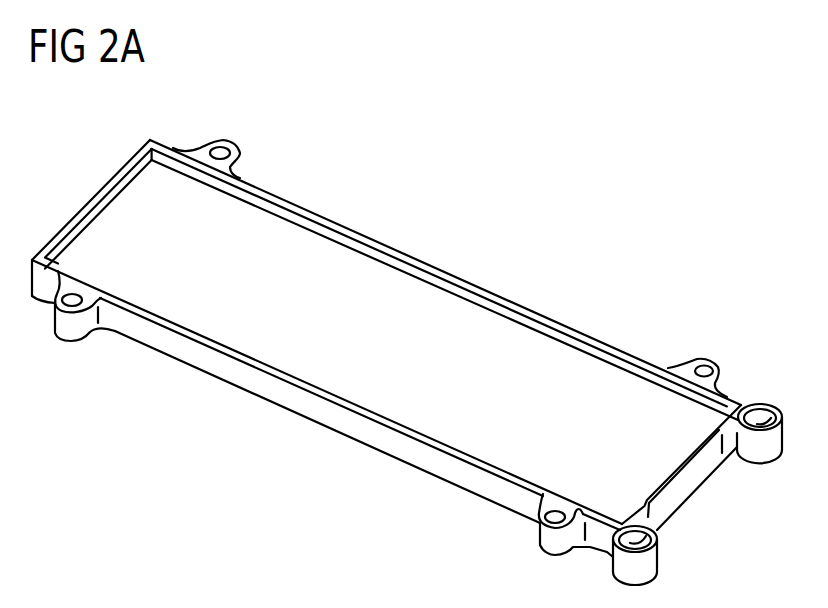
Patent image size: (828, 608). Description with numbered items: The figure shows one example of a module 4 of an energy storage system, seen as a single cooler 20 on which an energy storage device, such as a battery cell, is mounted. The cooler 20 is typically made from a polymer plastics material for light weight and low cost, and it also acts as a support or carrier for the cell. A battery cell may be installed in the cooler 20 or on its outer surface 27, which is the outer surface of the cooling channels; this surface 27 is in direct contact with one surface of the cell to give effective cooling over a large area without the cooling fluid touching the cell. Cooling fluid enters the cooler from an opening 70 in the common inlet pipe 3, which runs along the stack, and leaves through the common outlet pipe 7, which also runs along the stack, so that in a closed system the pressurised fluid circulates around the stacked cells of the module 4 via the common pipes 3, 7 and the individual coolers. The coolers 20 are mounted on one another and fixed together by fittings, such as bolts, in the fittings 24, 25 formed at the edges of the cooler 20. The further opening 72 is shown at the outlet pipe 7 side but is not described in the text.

The module 4 is at (91, 183).
The cooler 20 is at (291, 390).
The outer surface 27 is at (418, 293).
The fittings 24 is at (220, 150).
The fittings 25 is at (706, 365).
The common inlet pipe 3 is at (655, 554).
The common outlet pipe 7 is at (783, 440).
The opening 70 is at (635, 531).
The opening 72 is at (757, 410).